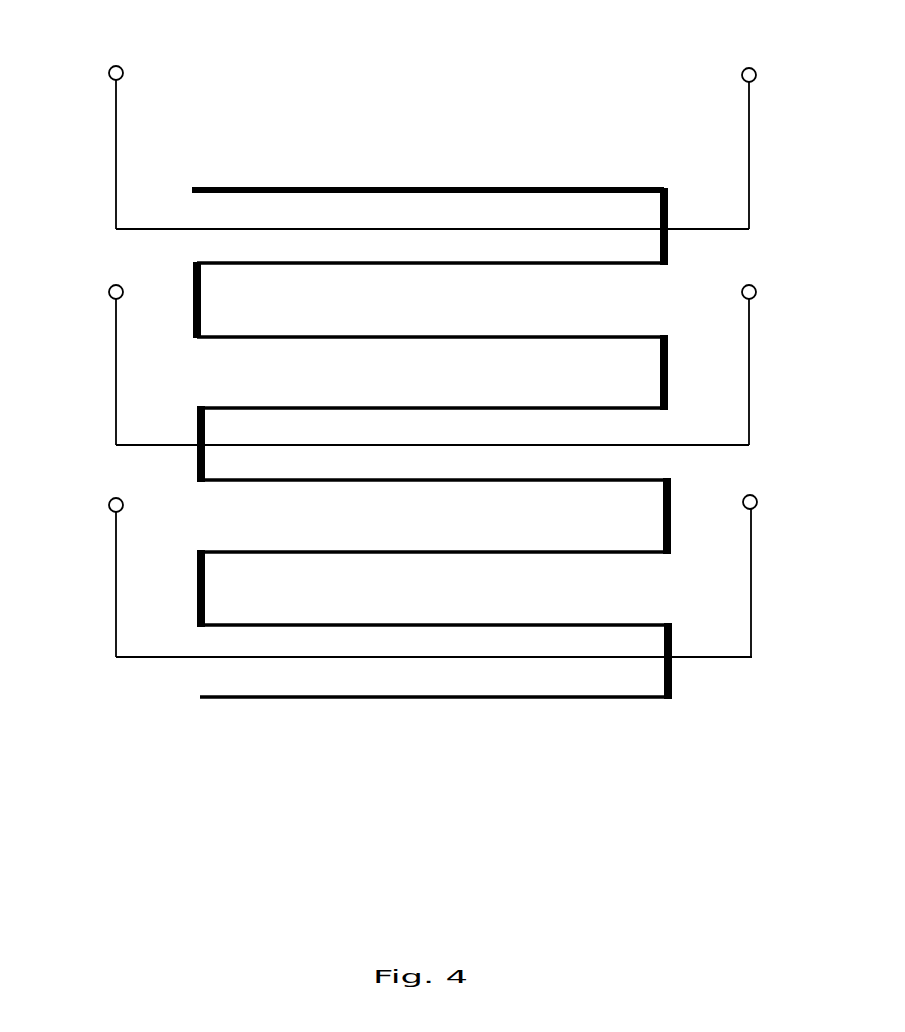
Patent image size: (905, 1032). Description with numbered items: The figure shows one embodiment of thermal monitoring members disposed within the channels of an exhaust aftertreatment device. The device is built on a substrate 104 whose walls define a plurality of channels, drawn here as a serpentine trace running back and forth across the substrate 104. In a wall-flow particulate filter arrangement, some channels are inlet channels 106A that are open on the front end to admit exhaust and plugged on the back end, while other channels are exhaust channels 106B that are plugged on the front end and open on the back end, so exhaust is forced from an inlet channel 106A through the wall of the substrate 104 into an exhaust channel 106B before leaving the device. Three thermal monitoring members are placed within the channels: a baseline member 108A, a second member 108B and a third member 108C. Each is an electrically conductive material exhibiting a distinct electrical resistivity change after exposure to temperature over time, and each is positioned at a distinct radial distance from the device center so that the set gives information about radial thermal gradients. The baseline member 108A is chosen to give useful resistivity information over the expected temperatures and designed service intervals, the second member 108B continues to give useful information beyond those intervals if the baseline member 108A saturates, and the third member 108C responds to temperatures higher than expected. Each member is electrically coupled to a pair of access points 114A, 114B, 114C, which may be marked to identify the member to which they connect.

The substrate 104 is at (430, 385).
The inlet channel 106A is at (385, 212).
The exhaust channel 106B is at (477, 300).
The baseline thermal monitoring member 108A is at (305, 229).
The second thermal monitoring member 108B is at (305, 445).
The third thermal monitoring member 108C is at (308, 657).
The access point 114A is at (115, 66).
The access point 114B is at (109, 292).
The access point 114C is at (109, 505).